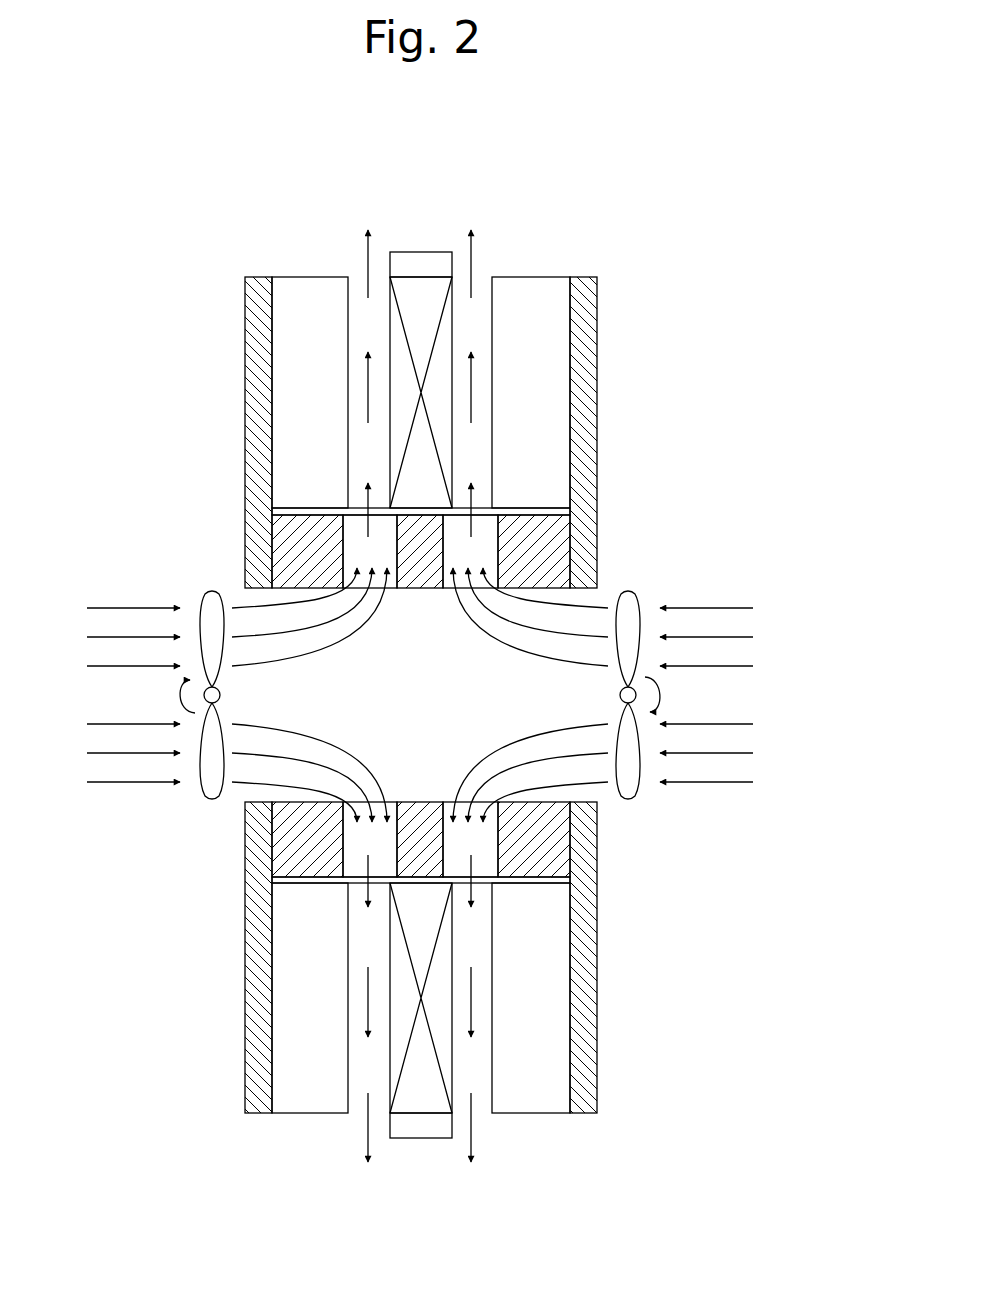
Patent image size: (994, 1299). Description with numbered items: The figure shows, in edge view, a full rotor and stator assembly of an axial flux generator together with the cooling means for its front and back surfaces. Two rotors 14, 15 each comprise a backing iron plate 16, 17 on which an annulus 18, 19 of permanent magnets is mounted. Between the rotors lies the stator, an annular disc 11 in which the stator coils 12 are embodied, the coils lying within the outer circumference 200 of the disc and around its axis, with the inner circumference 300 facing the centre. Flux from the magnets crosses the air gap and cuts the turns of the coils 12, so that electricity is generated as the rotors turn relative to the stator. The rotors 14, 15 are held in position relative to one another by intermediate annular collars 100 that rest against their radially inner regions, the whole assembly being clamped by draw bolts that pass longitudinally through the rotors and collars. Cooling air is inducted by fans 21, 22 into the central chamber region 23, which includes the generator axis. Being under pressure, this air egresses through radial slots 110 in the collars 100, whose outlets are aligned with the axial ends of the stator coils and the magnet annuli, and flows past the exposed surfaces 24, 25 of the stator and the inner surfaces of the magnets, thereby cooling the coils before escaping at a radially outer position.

The annular disc 11 is at (412, 1138).
The stator coils 12 is at (422, 305).
The rotor 14 is at (235, 253).
The rotor 15 is at (607, 253).
The backing iron plate 16 is at (258, 402).
The backing iron plate 17 is at (583, 418).
The annulus of permanent magnets 18 is at (302, 1048).
The annulus of permanent magnets 19 is at (537, 1052).
The fan 21 is at (212, 800).
The fan 22 is at (630, 800).
The central chamber region 23 is at (432, 713).
The exposed surface of the stator 24 is at (389, 340).
The exposed surface of the stator 25 is at (455, 340).
The intermediate annular collar 100 is at (538, 548).
The radial slots 110 is at (358, 848).
The outer circumference 200 is at (433, 1138).
The inner circumference 300 is at (418, 510).